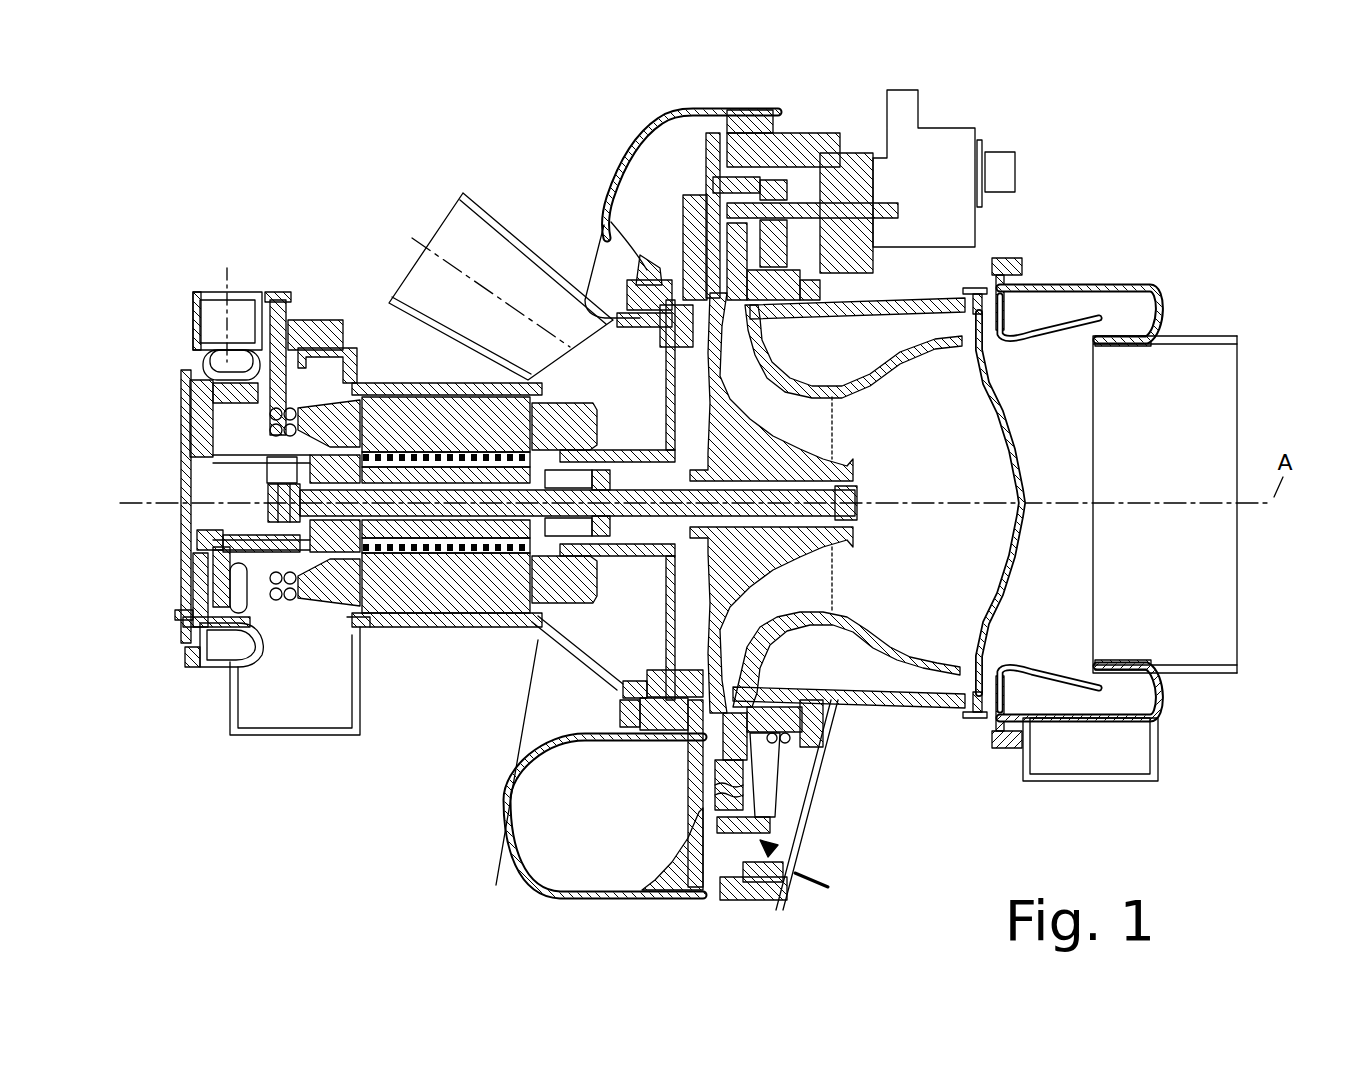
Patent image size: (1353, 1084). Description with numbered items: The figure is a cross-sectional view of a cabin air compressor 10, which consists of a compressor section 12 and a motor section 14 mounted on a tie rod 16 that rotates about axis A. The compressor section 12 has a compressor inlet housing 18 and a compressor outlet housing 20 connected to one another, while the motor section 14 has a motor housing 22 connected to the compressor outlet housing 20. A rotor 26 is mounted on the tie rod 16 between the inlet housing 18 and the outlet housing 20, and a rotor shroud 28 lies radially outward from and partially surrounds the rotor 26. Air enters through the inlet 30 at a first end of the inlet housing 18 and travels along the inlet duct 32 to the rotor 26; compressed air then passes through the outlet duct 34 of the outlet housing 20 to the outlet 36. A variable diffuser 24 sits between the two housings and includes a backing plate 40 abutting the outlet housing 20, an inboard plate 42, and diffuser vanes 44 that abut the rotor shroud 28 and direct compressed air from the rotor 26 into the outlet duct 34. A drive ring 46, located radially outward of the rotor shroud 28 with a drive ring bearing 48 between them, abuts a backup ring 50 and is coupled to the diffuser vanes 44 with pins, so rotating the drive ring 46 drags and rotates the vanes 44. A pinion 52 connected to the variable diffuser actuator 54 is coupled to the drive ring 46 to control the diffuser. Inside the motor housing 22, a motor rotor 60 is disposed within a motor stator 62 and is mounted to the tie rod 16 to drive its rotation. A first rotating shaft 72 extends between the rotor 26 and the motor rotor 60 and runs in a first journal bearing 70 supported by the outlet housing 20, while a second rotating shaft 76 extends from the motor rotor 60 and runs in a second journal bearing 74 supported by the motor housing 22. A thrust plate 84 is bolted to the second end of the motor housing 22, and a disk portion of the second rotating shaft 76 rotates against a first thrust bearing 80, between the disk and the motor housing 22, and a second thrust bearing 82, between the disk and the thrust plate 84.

The cabin air compressor 10 is at (190, 136).
The compressor section 12 is at (1108, 148).
The motor section 14 is at (298, 250).
The tie rod 16 is at (506, 524).
The compressor inlet housing 18 is at (1152, 332).
The compressor outlet housing 20 is at (640, 128).
The motor housing 22 is at (358, 383).
The variable diffuser 24 is at (790, 862).
The rotor 26 is at (752, 560).
The rotor shroud 28 is at (862, 398).
The inlet 30 is at (1238, 412).
The inlet duct 32 is at (1103, 438).
The outlet duct 34 is at (675, 188).
The outlet 36 is at (568, 825).
The backing plate 40 is at (697, 748).
The inboard plate 42 is at (692, 882).
The diffuser vanes 44 is at (718, 873).
The drive ring 46 is at (775, 800).
The drive ring bearing 48 is at (820, 745).
The backup ring 50 is at (805, 718).
The pinion 52 is at (800, 200).
The variable diffuser actuator 54 is at (948, 142).
The motor rotor 60 is at (386, 628).
The motor stator 62 is at (438, 580).
The first journal bearing 70 is at (606, 450).
The first rotating shaft 72 is at (594, 562).
The second journal bearing 74 is at (200, 446).
The second rotating shaft 76 is at (252, 478).
The first thrust bearing 80 is at (232, 567).
The second thrust bearing 82 is at (193, 590).
The thrust plate 84 is at (197, 560).